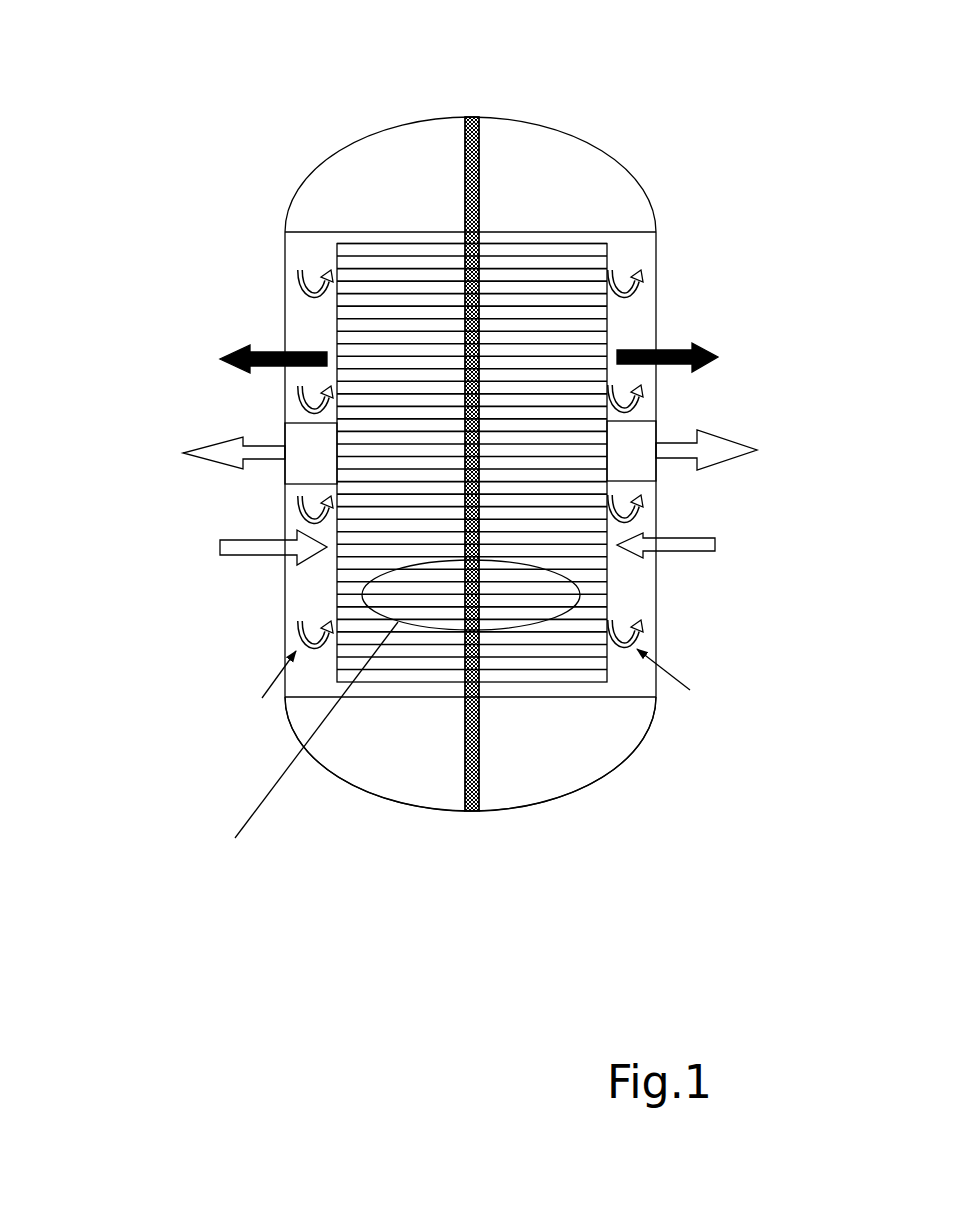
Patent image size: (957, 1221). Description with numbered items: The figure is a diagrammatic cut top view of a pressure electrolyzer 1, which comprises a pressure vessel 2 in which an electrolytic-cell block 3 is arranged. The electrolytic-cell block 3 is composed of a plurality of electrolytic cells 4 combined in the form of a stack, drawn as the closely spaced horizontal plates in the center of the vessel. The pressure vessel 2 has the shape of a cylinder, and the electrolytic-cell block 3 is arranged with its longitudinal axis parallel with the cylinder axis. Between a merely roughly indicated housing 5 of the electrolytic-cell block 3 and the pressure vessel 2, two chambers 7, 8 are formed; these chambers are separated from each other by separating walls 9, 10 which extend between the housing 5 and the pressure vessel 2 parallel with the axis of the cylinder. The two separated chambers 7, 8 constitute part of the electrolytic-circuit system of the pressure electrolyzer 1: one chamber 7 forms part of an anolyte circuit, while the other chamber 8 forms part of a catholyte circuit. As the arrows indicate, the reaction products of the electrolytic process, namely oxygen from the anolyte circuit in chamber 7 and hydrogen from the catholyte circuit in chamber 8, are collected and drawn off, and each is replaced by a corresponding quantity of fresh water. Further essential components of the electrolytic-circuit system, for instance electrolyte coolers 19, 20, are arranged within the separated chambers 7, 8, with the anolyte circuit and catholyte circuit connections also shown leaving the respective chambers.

The pressure electrolyzer 1 is at (452, 456).
The pressure vessel 2 is at (649, 187).
The electrolytic-cell block 3 is at (335, 329).
The electrolytic cells 4 is at (356, 265).
The housing 5 is at (337, 567).
The chamber 7 is at (414, 758).
The chamber 8 is at (578, 751).
The separating wall 9 is at (482, 787).
The separating wall 10 is at (500, 808).
The electrolyte cooler 19 is at (326, 471).
The electrolyte cooler 20 is at (643, 465).